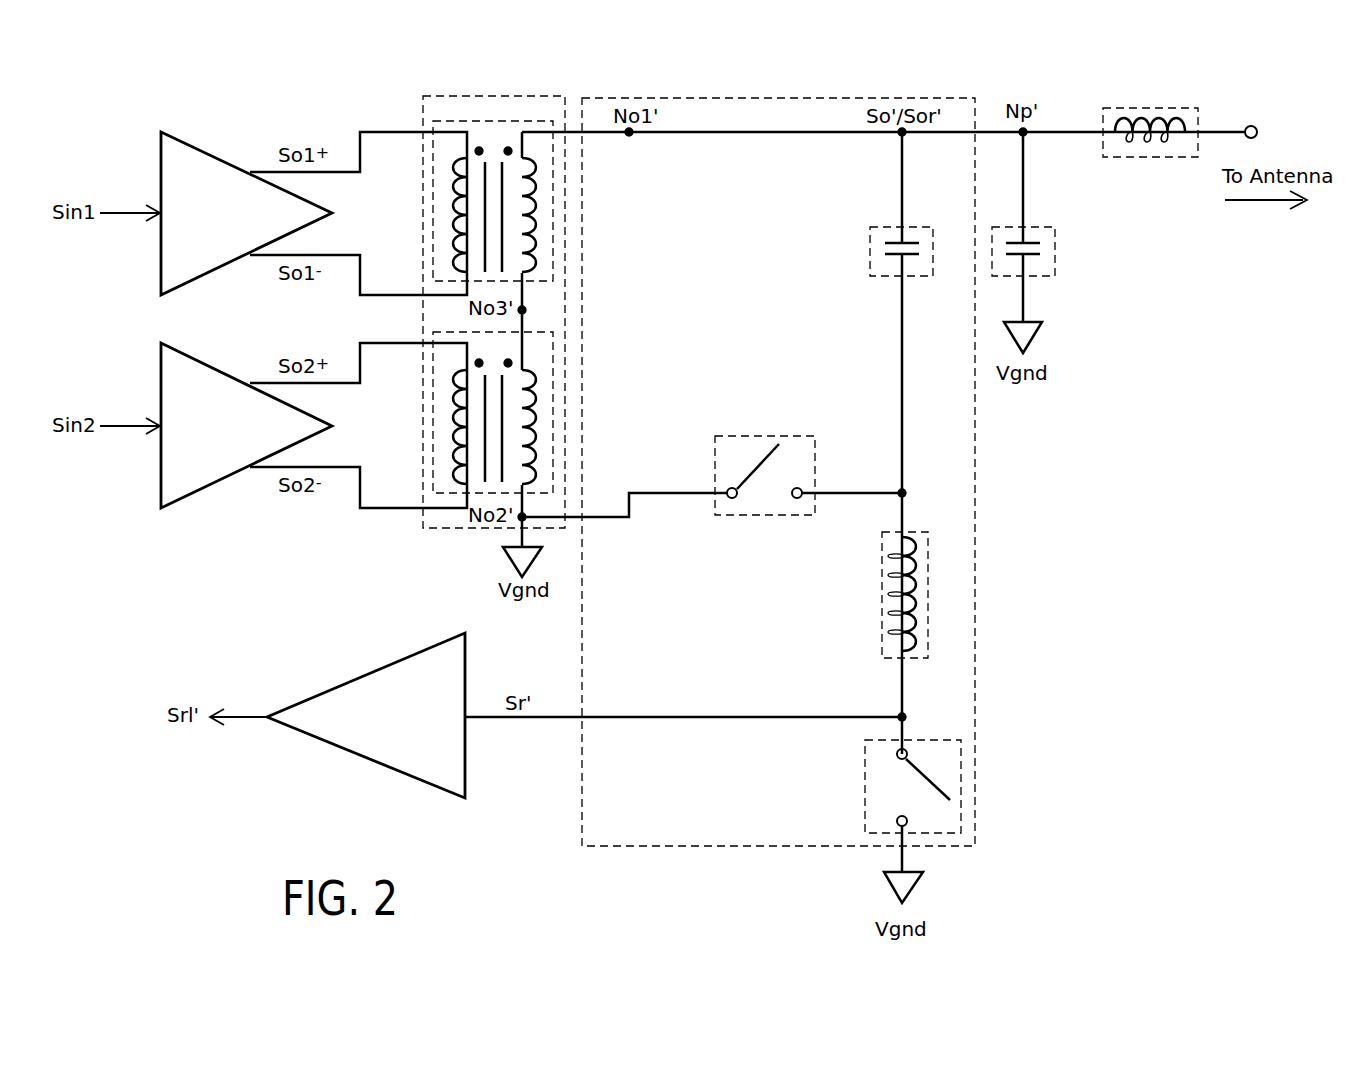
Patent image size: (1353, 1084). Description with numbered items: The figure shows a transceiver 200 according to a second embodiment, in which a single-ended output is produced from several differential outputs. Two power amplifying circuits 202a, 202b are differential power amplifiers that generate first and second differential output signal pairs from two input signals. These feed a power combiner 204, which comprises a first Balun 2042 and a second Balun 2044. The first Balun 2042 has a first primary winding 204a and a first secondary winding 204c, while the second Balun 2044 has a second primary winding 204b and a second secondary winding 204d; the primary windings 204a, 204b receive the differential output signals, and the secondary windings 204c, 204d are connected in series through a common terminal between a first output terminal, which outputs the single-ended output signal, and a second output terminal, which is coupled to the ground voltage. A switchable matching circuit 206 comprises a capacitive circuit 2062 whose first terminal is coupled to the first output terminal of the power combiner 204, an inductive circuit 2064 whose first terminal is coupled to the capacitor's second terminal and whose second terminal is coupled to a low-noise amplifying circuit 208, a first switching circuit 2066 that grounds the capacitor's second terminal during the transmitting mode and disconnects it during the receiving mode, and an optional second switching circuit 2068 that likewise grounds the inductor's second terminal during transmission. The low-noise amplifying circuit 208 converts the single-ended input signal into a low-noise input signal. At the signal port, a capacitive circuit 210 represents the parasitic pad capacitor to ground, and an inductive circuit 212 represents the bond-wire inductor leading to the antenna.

The transceiver 200 is at (1112, 527).
The power amplifying circuit 202a is at (201, 143).
The power amplifying circuit 202b is at (201, 351).
The power combiner 204 is at (448, 530).
The first Balun 2042 is at (455, 121).
The second Balun 2044 is at (431, 410).
The first primary winding 204a is at (453, 199).
The second primary winding 204b is at (453, 443).
The first secondary winding 204c is at (540, 196).
The second secondary winding 204d is at (540, 426).
The switchable matching circuit 206 is at (938, 100).
The capacitive circuit 2062 is at (893, 226).
The inductive circuit 2064 is at (930, 562).
The first switching circuit 2066 is at (766, 435).
The second switching circuit 2068 is at (962, 796).
The low-noise amplifying circuit 208 is at (467, 672).
The capacitive circuit 210 is at (1046, 228).
The inductive circuit 212 is at (1178, 108).